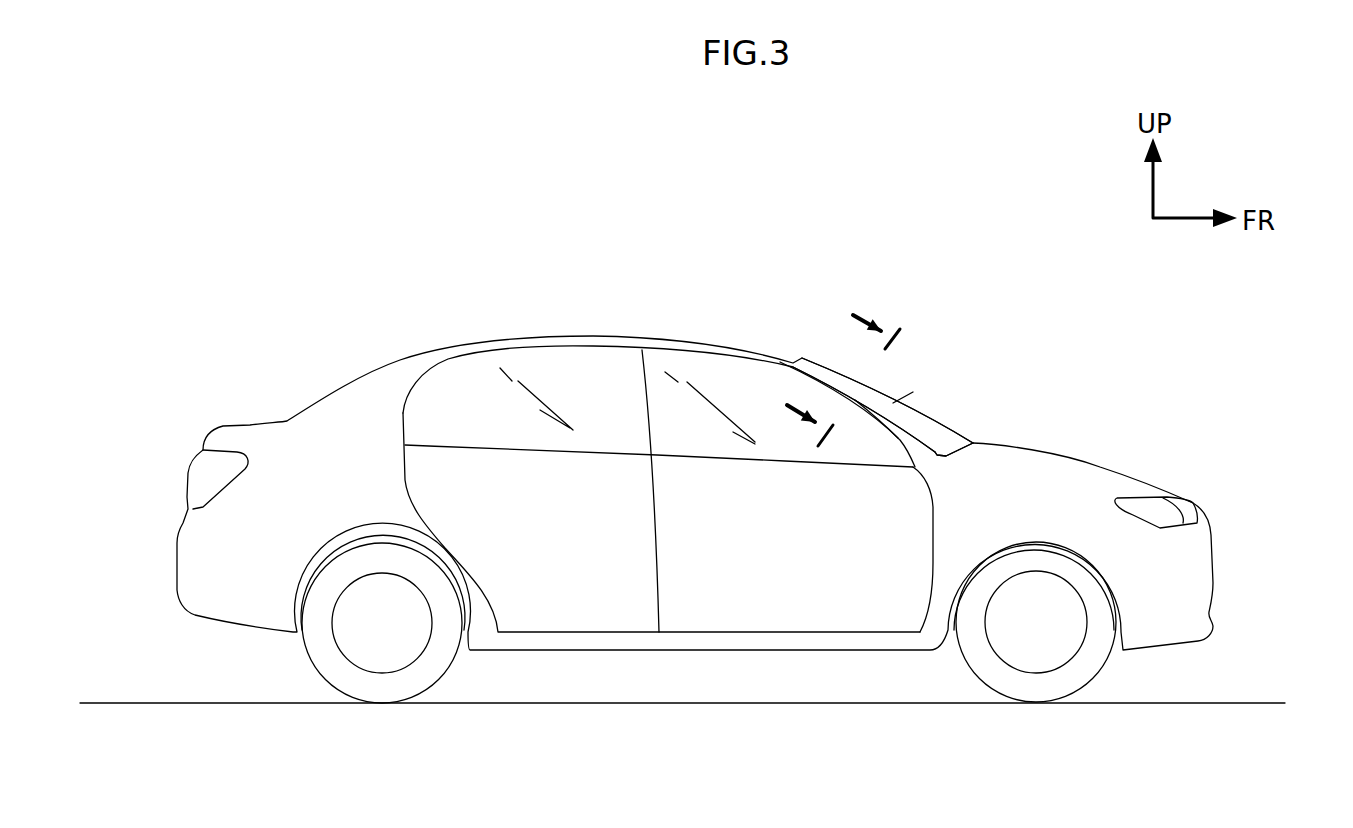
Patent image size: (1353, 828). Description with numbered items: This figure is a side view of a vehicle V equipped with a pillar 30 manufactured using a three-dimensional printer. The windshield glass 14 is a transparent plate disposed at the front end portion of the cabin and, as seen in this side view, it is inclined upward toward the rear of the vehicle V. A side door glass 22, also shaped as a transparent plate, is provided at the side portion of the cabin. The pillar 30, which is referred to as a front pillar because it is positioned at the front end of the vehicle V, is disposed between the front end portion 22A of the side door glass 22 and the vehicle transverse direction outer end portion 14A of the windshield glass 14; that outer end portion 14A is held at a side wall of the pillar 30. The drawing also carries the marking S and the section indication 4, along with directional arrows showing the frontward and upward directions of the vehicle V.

The vehicle V is at (527, 268).
The side door glass 22 is at (702, 370).
The front end portion of the side door glass 22A is at (863, 420).
The windshield glass 14 is at (830, 362).
The vehicle transverse direction outer end portion of the windshield glass 14A is at (835, 382).
The pillar 30 is at (903, 427).
The gap space S is at (906, 372).
The section line of FIG. 4 is at (835, 367).